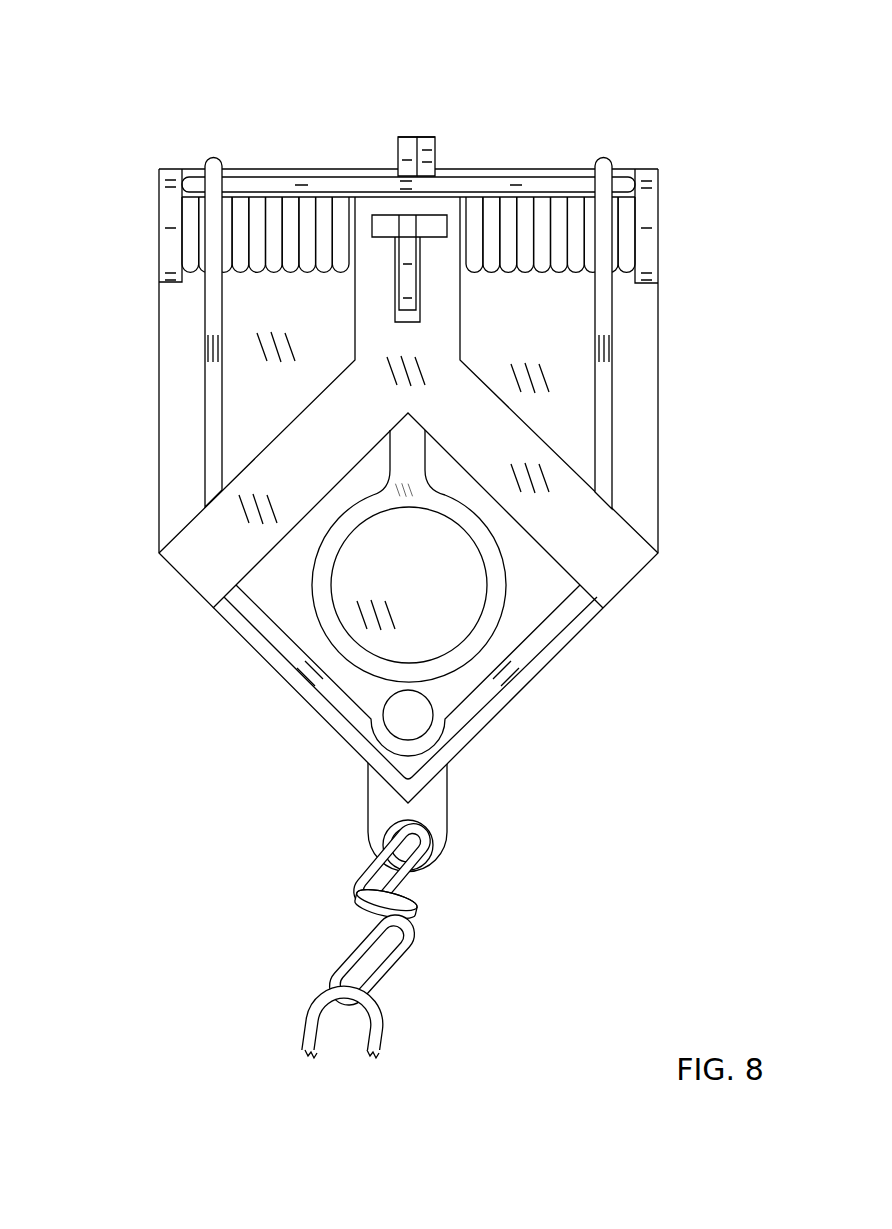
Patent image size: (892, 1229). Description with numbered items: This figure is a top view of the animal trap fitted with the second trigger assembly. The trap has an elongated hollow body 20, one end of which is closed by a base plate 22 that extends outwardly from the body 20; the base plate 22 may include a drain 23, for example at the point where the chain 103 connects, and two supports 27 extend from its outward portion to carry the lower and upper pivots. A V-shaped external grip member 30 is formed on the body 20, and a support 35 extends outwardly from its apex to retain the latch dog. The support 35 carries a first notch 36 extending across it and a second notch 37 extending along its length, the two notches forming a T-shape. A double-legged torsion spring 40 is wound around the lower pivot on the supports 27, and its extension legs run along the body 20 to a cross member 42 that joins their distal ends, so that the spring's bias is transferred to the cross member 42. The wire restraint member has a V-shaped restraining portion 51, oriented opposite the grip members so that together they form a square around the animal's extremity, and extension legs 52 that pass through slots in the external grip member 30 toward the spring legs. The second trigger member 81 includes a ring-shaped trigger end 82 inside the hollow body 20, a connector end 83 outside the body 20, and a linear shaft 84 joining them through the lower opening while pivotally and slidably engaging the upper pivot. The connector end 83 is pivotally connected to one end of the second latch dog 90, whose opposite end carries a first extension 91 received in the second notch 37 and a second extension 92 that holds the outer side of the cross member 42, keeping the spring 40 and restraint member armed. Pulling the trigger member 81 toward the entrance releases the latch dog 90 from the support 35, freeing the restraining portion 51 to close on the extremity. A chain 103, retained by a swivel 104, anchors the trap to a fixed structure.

The hollow body 20 is at (538, 685).
The base plate 22 is at (642, 432).
The drain 23 is at (433, 716).
The supports 27 is at (170, 246).
The external grip member 30 is at (607, 568).
The support 35 is at (415, 341).
The first notch 36 is at (372, 227).
The second notch 37 is at (395, 300).
The torsion spring 40 is at (258, 276).
The cross member 42 is at (258, 186).
The restraining portion 51 is at (408, 767).
The extension legs 52 is at (210, 425).
The second trigger member 81 is at (310, 583).
The trigger end 82 is at (323, 618).
The connector end 83 is at (435, 147).
The shaft 84 is at (410, 455).
The second latch dog 90 is at (408, 136).
The first extension 91 is at (406, 285).
The second extension 92 is at (398, 143).
The chain 103 is at (356, 959).
The swivel 104 is at (418, 917).